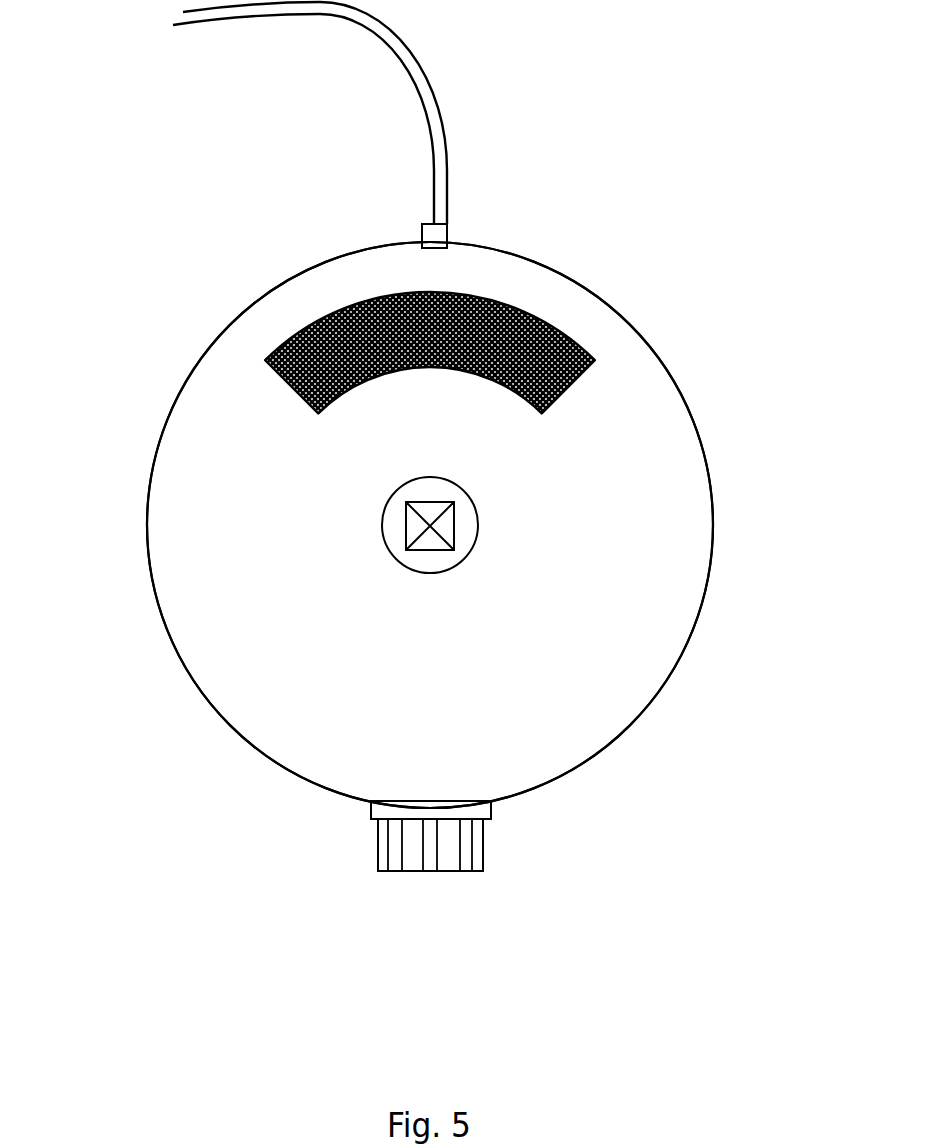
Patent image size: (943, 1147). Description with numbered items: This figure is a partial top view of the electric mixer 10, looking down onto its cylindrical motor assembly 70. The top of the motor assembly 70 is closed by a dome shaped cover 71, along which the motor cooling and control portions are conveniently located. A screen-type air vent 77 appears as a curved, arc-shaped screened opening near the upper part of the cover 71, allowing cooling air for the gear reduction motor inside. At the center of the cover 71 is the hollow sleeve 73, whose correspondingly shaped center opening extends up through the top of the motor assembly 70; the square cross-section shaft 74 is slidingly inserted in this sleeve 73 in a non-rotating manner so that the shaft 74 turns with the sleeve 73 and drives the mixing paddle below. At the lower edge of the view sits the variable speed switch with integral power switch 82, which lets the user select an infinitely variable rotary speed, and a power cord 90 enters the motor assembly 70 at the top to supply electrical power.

The electric mixer 10 is at (279, 284).
The motor assembly 70 is at (657, 350).
The dome shaped cover 71 is at (632, 535).
The hollow sleeve 73 is at (415, 488).
The shaft 74 is at (410, 527).
The vent 77 is at (520, 313).
The variable speed switch with integral power switch 82 is at (447, 856).
The power cord 90 is at (438, 90).